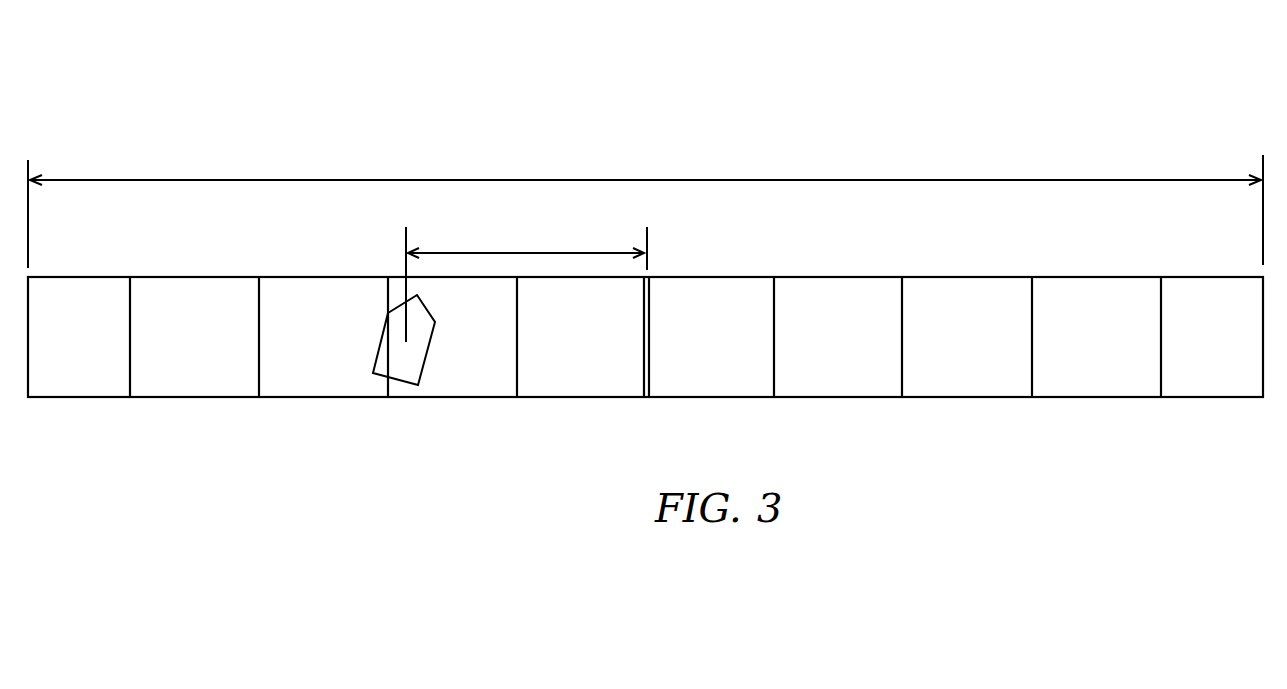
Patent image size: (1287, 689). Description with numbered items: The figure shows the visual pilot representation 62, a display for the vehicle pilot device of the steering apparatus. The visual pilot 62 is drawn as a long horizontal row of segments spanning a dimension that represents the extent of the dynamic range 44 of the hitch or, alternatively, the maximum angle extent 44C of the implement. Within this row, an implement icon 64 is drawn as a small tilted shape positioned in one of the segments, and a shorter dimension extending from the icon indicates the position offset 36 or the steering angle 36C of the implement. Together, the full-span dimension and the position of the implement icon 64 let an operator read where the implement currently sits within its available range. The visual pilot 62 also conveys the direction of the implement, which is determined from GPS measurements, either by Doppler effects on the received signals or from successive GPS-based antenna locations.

The visual pilot representation 62 is at (197, 147).
The dynamic range 44 is at (645, 196).
The maximum angle extent 44C is at (750, 178).
The position offset 36 is at (526, 275).
The steering angle 36C is at (572, 252).
The implement icon 64 is at (385, 326).